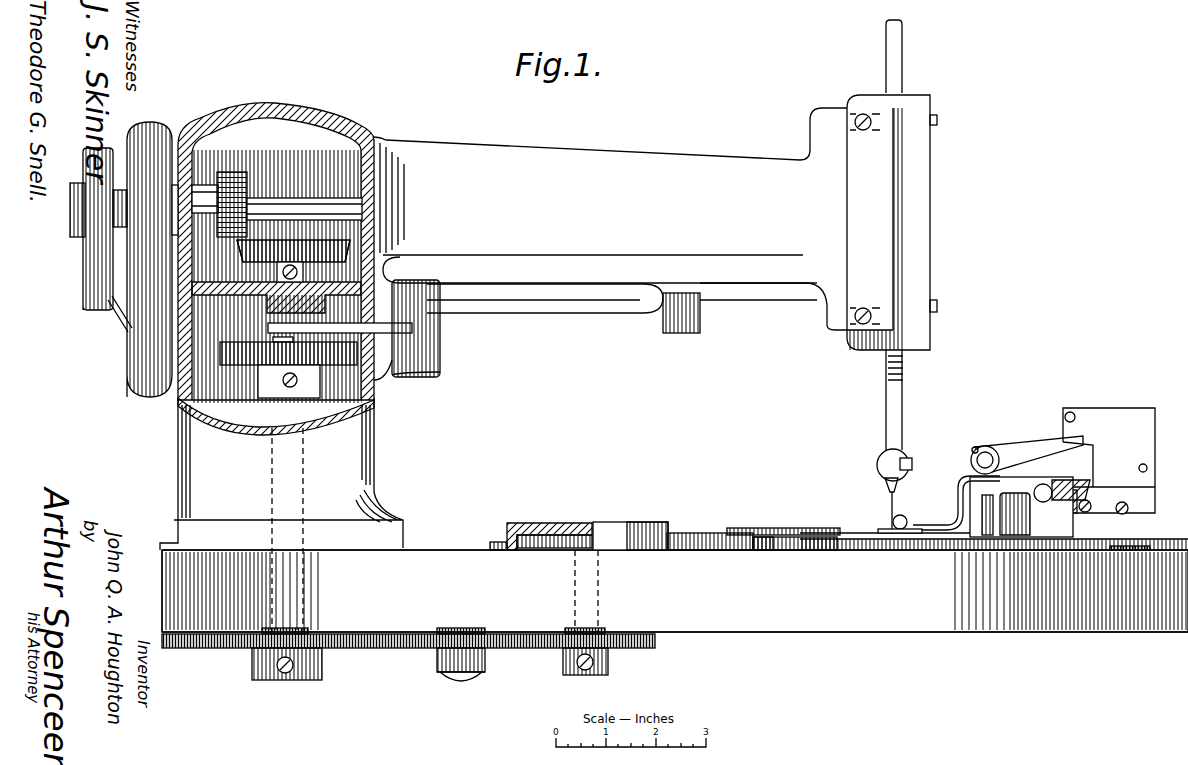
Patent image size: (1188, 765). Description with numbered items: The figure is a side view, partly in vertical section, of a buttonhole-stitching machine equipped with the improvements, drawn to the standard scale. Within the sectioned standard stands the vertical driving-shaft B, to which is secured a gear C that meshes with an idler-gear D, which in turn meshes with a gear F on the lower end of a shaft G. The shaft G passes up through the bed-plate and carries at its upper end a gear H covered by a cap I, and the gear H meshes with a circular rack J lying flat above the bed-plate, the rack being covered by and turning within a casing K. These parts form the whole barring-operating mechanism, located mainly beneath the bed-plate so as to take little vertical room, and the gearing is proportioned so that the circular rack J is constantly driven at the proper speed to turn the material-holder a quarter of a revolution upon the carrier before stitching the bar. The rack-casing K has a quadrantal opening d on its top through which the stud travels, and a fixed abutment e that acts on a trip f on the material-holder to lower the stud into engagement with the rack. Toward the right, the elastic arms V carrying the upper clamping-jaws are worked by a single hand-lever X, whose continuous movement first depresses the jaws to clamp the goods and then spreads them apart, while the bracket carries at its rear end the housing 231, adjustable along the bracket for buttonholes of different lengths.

The bed plate A is at (480, 549).
The vertical driving-shaft B is at (277, 418).
The gear C is at (228, 652).
The idler-gear D is at (430, 652).
The gear F is at (620, 652).
The shaft G is at (578, 593).
The gear H is at (585, 522).
The cap I is at (538, 522).
The circular rack J is at (797, 552).
The rack-casing K is at (700, 540).
The elastic arms V is at (942, 528).
The hand-lever X is at (1040, 454).
The quadrantal opening d is at (780, 552).
The fixed abutment e is at (856, 533).
The trip f is at (1112, 514).
The housing 231 is at (1106, 460).